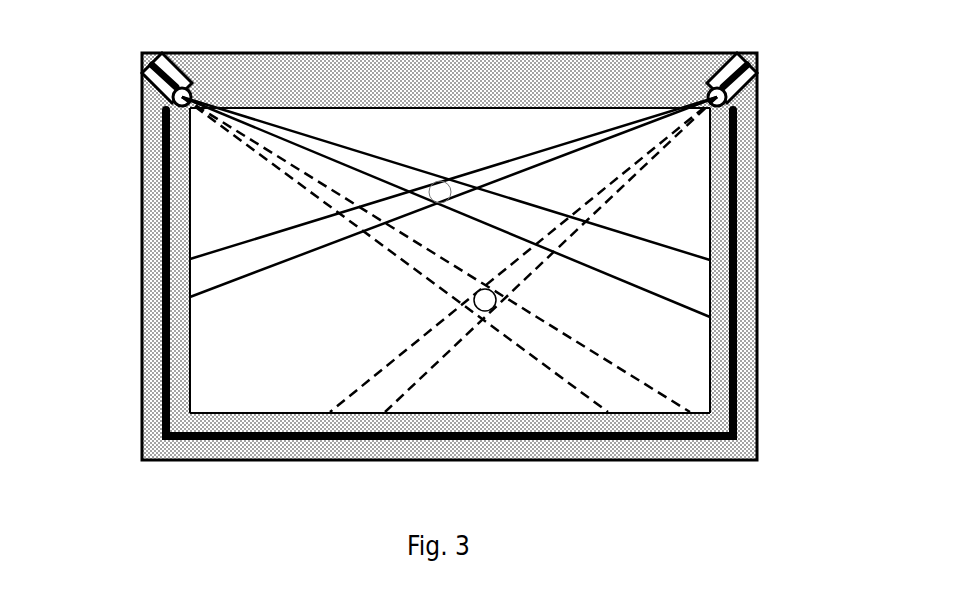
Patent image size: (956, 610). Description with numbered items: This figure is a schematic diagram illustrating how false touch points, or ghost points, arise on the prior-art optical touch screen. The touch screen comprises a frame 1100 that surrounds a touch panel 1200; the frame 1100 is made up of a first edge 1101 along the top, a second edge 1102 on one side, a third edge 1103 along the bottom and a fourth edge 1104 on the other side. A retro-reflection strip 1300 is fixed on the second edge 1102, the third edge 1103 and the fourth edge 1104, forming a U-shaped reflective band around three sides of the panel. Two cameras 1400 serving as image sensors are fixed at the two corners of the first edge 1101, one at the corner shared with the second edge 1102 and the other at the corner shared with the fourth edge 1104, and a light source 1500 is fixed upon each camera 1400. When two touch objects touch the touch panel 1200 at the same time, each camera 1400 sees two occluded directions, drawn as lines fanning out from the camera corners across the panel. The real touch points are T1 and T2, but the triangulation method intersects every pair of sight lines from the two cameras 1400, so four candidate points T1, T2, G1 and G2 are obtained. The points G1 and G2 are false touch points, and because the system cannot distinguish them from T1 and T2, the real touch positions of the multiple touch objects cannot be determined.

The frame 1100 is at (457, 265).
The first edge 1101 is at (450, 53).
The second edge 1102 is at (142, 257).
The third edge 1103 is at (460, 460).
The fourth edge 1104 is at (757, 257).
The touch panel 1200 is at (618, 400).
The retro-reflection strip 1300 is at (737, 358).
The camera 1400 is at (435, 61).
The light source 1500 is at (785, 82).
The false touch point G1 is at (365, 222).
The false touch point G2 is at (565, 240).
The real touch point T1 is at (442, 182).
The real touch point T2 is at (487, 312).